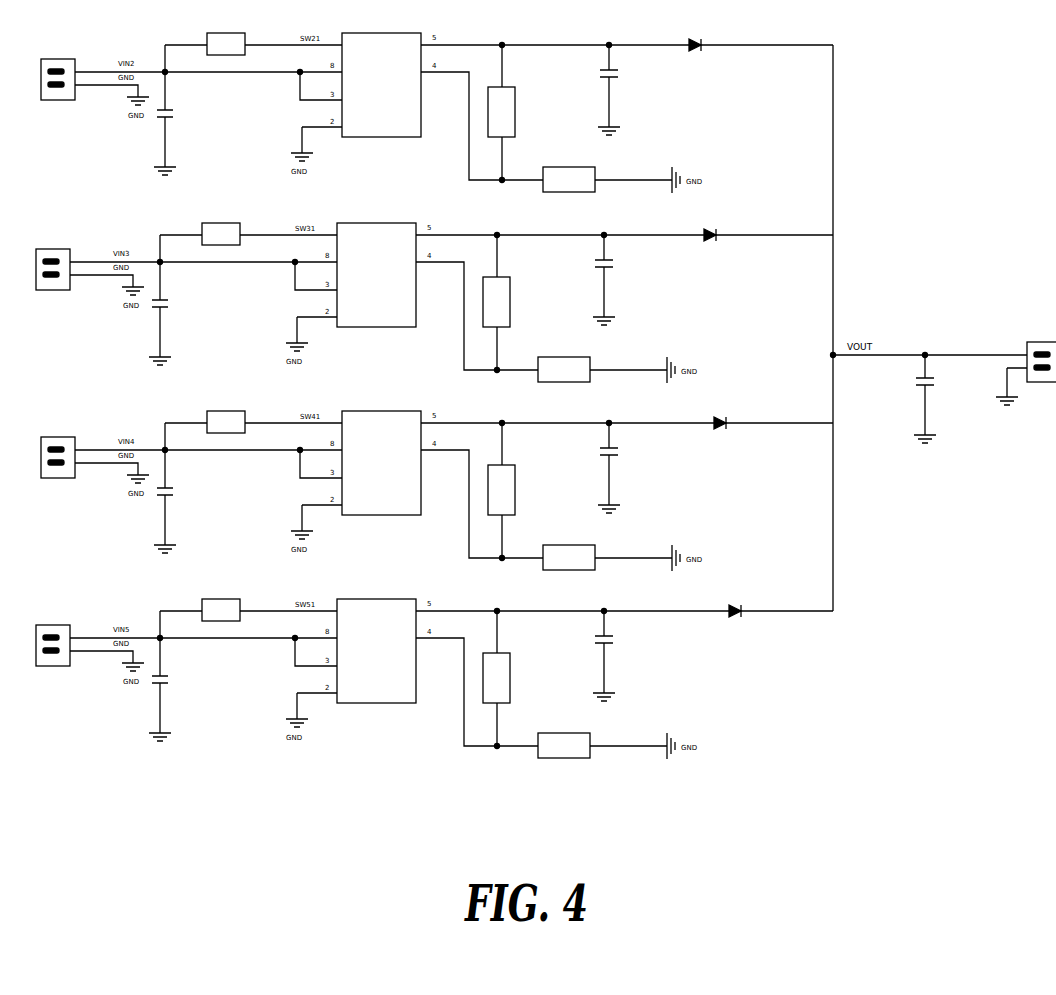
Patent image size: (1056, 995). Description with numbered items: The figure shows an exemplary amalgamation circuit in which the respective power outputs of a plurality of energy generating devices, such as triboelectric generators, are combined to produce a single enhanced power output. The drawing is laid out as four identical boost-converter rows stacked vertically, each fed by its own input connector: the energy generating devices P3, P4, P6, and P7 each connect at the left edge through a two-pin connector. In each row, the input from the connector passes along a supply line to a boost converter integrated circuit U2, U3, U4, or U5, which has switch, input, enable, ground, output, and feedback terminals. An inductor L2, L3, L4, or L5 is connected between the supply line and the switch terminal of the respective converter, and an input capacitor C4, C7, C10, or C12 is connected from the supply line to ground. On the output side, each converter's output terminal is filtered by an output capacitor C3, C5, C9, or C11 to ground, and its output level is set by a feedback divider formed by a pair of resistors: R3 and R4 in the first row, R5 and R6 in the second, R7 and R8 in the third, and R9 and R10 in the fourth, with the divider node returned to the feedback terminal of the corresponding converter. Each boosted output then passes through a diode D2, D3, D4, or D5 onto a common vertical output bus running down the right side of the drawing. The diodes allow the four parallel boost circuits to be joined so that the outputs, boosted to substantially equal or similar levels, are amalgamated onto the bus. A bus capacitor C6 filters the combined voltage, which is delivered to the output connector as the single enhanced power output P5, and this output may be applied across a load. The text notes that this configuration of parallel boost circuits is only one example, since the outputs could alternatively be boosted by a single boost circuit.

The input connector P3 is at (61, 71).
The energy generating device P4 is at (56, 261).
The energy generating device P6 is at (61, 449).
The energy generating device P7 is at (56, 637).
The single power output P5 is at (1020, 373).
The inductor L2 is at (224, 45).
The inductor L3 is at (219, 235).
The inductor L4 is at (224, 423).
The inductor L5 is at (219, 611).
The boost converter IC U2 is at (381, 79).
The boost converter IC U3 is at (376, 269).
The boost converter IC U4 is at (381, 457).
The boost converter IC U5 is at (376, 645).
The output capacitor C3 is at (618, 97).
The input capacitor C4 is at (174, 145).
The output capacitor C5 is at (613, 287).
The output bus capacitor C6 is at (928, 413).
The input capacitor C7 is at (169, 335).
The output capacitor C9 is at (618, 475).
The input capacitor C10 is at (174, 523).
The output capacitor C11 is at (613, 663).
The input capacitor C12 is at (169, 711).
The feedback resistor R3 is at (523, 112).
The feedback resistor R4 is at (567, 180).
The feedback resistor R5 is at (518, 302).
The feedback resistor R6 is at (562, 370).
The feedback resistor R7 is at (523, 490).
The feedback resistor R8 is at (567, 558).
The feedback resistor R9 is at (518, 678).
The feedback resistor R10 is at (562, 746).
The diode D2 is at (695, 38).
The diode D3 is at (710, 228).
The diode D4 is at (720, 416).
The diode D5 is at (735, 604).